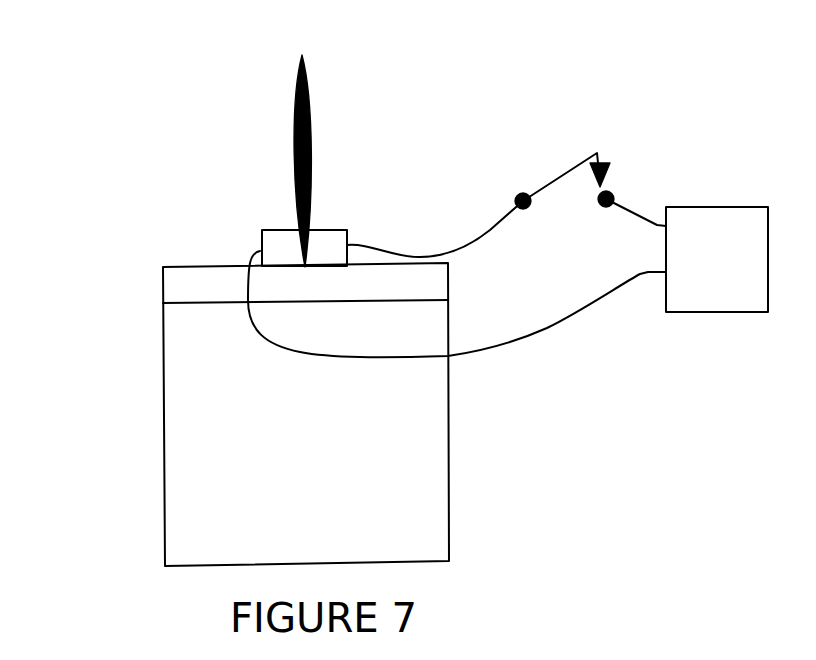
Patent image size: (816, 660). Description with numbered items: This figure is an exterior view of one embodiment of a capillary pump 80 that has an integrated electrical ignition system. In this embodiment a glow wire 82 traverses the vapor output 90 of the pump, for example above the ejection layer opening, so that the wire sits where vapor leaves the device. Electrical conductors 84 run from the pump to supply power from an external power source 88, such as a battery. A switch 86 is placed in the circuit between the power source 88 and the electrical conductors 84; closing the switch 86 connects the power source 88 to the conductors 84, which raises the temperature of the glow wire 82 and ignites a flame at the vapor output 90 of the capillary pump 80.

The capillary pump 80 is at (193, 368).
The glow wire 82 is at (263, 233).
The electrical conductors 84 is at (546, 330).
The switch 86 is at (555, 177).
The power source 88 is at (712, 215).
The vapor output 90 is at (293, 120).